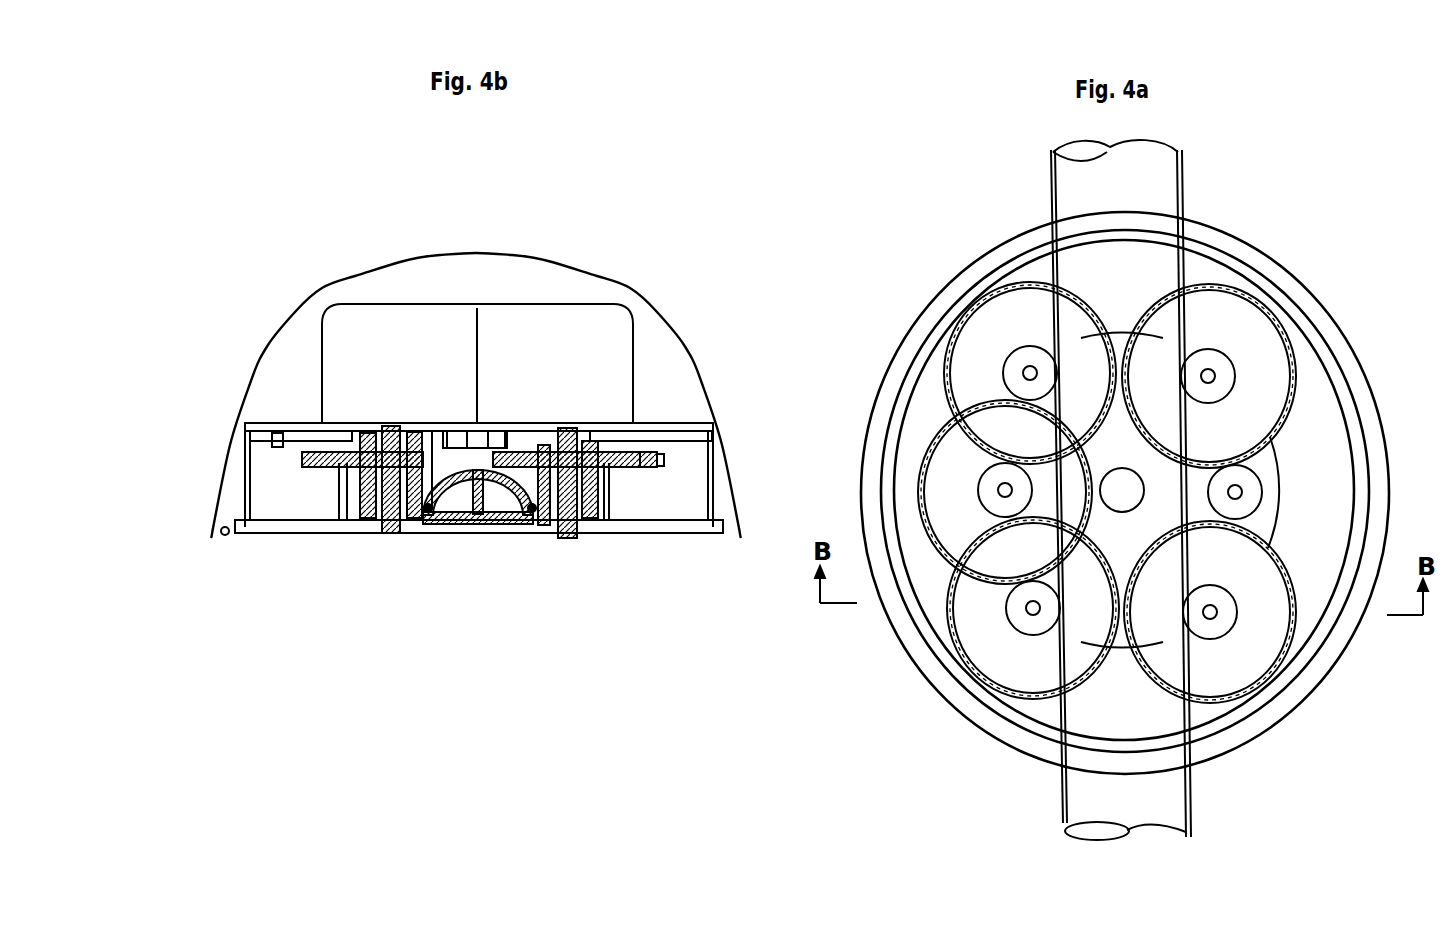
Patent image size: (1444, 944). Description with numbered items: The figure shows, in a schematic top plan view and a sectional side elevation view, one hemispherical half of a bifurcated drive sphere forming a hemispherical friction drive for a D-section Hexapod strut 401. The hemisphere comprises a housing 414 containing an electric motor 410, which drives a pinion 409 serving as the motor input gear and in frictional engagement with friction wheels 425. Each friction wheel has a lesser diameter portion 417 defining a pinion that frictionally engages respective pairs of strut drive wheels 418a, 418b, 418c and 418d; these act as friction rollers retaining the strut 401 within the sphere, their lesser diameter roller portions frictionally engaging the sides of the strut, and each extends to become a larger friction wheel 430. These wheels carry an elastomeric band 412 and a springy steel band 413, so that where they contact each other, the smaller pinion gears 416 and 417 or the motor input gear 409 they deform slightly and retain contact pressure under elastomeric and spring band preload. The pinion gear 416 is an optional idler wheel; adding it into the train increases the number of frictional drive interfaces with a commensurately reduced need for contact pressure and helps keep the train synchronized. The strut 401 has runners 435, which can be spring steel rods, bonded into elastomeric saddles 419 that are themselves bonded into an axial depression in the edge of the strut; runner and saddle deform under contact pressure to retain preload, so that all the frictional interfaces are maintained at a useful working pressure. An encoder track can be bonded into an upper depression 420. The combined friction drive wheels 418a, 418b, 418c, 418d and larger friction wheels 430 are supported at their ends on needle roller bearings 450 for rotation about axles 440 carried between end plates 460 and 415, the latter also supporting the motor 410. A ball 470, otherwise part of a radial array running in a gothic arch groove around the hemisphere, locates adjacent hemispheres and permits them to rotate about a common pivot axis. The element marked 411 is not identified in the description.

In FIG. 4B, the strut 401 is at (468, 535).
In FIG. 4A, the strut 401 is at (1157, 205).
In FIG. 4B, the pinion 409 is at (450, 432).
In FIG. 4A, the pinion 409 is at (1137, 478).
In FIG. 4B, the electric motor 410 is at (599, 366).
In FIG. 4A, the electric motor 410 is at (1263, 518).
In FIG. 4B, the frame plate 411 is at (510, 432).
In FIG. 4B, the elastomeric band 412 is at (657, 450).
In FIG. 4A, the elastomeric band 412 is at (1263, 337).
In FIG. 4B, the springy steel band 413 is at (667, 460).
In FIG. 4A, the springy steel band 413 is at (1270, 367).
In FIG. 4B, the housing 414 is at (728, 504).
In FIG. 4B, the end plate 415 is at (650, 430).
In FIG. 4A, the idler wheel 416 is at (1250, 485).
In FIG. 4A, the lesser diameter portion 417 is at (991, 481).
In FIG. 4A, the strut drive wheel 418a is at (1016, 356).
In FIG. 4A, the strut drive wheel 418b is at (1025, 625).
In FIG. 4A, the strut drive wheel 418c is at (1208, 345).
In FIG. 4A, the strut drive wheel 418d is at (1218, 627).
In FIG. 4B, the elastomeric saddle 419 is at (545, 534).
In FIG. 4B, the upper depression 420 is at (413, 423).
In FIG. 4B, the friction wheel 425 is at (280, 423).
In FIG. 4A, the friction wheel 425 is at (952, 552).
In FIG. 4B, the larger friction wheel 430 is at (550, 530).
In FIG. 4A, the larger friction wheel 430 is at (1216, 338).
In FIG. 4B, the runner 435 is at (528, 535).
In FIG. 4A, the runner 435 is at (1190, 230).
In FIG. 4B, the axle 440 is at (570, 530).
In FIG. 4B, the needle roller bearing 450 is at (405, 530).
In FIG. 4B, the end plate 460 is at (312, 530).
In FIG. 4B, the ball 470 is at (222, 534).